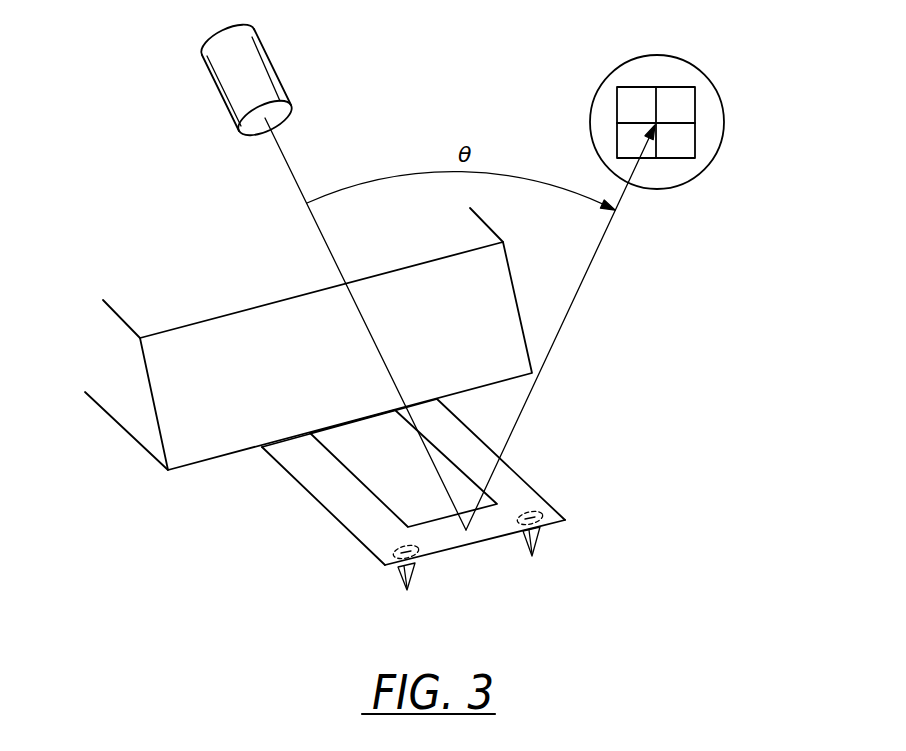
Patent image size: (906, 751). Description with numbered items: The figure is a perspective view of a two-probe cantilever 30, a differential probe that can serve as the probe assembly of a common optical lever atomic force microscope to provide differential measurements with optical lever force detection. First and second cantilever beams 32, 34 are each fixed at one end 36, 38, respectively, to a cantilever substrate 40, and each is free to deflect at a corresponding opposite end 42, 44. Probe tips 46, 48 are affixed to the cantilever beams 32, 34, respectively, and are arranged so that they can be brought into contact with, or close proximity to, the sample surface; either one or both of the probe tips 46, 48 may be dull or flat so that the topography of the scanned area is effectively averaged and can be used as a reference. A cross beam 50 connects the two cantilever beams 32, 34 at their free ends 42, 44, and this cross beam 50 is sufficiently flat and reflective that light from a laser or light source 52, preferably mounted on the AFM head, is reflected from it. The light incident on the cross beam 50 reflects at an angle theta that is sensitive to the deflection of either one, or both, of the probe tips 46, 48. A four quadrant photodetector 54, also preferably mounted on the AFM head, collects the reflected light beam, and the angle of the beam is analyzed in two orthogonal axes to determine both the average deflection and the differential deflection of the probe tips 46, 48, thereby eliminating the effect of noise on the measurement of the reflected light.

The two-probe cantilever 30 is at (624, 389).
The first cantilever beam 32 is at (357, 522).
The second cantilever beam 34 is at (510, 473).
The fixed end of first cantilever beam 36 is at (262, 447).
The fixed end of second cantilever beam 38 is at (438, 400).
The cantilever substrate 40 is at (150, 445).
The free end of first cantilever beam 42 is at (385, 565).
The free end of second cantilever beam 44 is at (562, 522).
The probe tip 46 is at (407, 590).
The probe tip 48 is at (537, 552).
The cross beam 50 is at (483, 537).
The laser or light source 52 is at (260, 72).
The four quadrant photodetector 54 is at (723, 142).